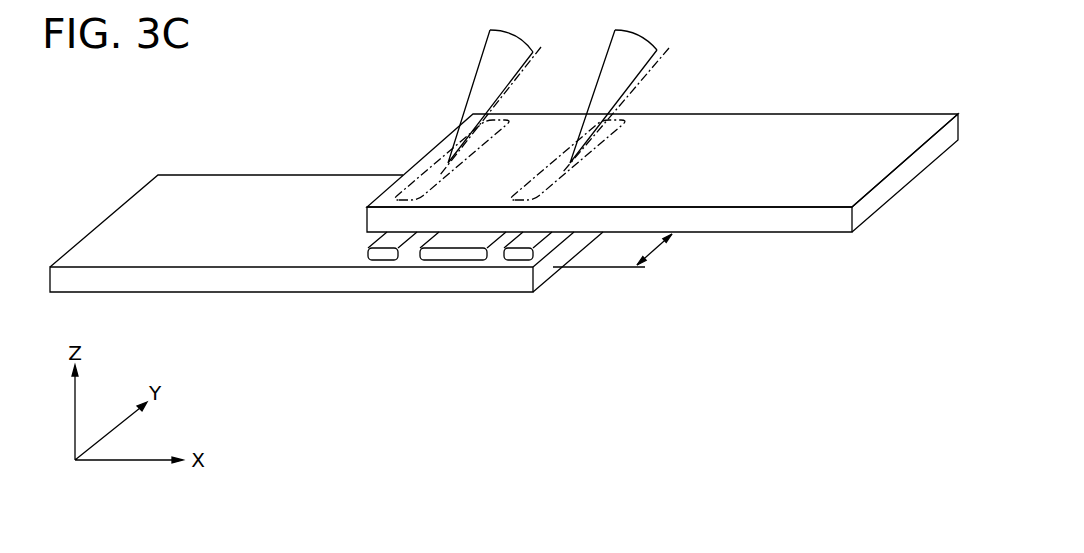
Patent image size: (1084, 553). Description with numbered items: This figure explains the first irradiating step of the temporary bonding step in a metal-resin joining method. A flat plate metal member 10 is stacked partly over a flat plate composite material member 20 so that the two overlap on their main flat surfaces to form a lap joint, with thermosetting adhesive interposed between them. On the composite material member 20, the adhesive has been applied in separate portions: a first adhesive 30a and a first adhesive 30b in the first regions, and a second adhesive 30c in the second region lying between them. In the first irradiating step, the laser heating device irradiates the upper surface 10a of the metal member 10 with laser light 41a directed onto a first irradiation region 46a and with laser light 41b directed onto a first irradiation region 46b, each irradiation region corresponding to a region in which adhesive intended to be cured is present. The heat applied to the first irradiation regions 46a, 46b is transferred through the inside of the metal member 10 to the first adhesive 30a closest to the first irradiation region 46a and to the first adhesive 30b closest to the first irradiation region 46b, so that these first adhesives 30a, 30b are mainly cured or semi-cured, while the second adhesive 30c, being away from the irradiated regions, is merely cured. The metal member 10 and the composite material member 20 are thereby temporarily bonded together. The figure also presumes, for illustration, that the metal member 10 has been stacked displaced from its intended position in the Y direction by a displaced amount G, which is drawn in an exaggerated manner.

The metal member 10 is at (662, 144).
The surface of the metal member 10a is at (450, 187).
The composite material member 20 is at (247, 175).
The first adhesive 30a is at (383, 258).
The first adhesive 30b is at (515, 258).
The second adhesive 30c is at (452, 258).
The laser light 41a is at (481, 63).
The laser light 41b is at (607, 65).
The first irradiation region 46a is at (436, 148).
The first irradiation region 46b is at (622, 130).
The displaced amount G is at (613, 254).